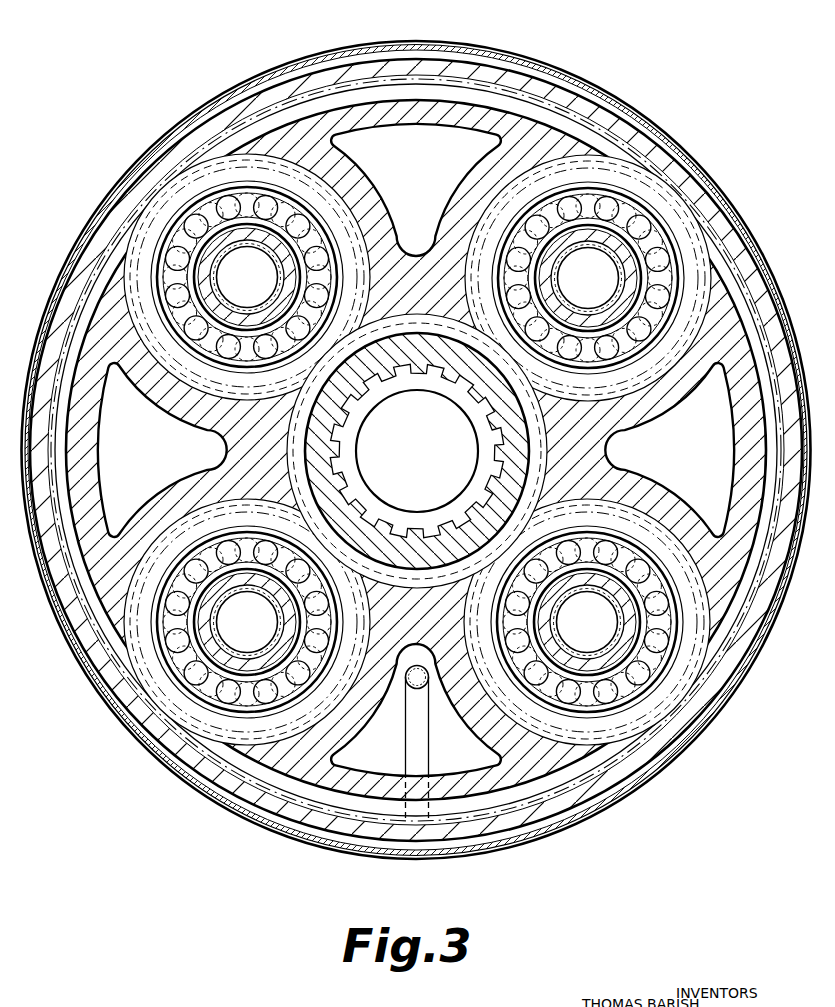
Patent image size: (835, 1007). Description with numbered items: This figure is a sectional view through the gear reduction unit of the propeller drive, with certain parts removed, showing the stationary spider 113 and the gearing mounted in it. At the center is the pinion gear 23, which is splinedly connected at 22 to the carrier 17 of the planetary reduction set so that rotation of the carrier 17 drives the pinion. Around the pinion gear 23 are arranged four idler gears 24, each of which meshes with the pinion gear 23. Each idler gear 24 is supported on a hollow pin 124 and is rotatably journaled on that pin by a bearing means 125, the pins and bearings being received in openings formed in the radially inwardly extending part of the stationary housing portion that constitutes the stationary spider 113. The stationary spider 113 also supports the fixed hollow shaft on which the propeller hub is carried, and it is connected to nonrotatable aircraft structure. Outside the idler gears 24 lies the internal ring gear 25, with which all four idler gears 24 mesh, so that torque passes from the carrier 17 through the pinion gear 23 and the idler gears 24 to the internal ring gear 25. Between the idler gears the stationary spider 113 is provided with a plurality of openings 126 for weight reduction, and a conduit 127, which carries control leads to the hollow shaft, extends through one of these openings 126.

The carrier 17 is at (477, 422).
The splined connection 22 is at (440, 370).
The pinion gear 23 is at (390, 357).
The idler gears 24 is at (483, 244).
The internal ring gear 25 is at (392, 835).
The stationary spider 113 is at (327, 782).
The hollow pins 124 is at (277, 281).
The bearing means 125 is at (510, 233).
The openings 126 is at (470, 146).
The conduit 127 is at (404, 754).